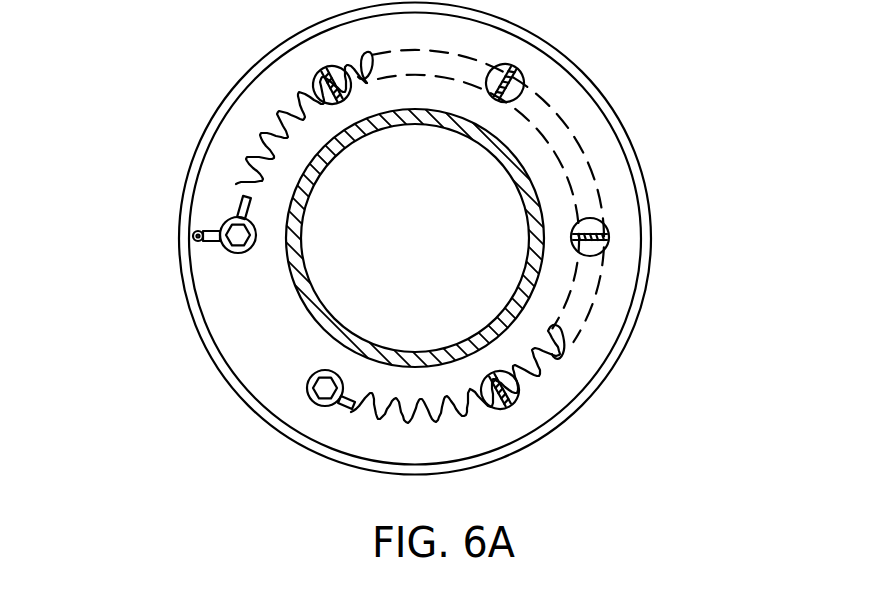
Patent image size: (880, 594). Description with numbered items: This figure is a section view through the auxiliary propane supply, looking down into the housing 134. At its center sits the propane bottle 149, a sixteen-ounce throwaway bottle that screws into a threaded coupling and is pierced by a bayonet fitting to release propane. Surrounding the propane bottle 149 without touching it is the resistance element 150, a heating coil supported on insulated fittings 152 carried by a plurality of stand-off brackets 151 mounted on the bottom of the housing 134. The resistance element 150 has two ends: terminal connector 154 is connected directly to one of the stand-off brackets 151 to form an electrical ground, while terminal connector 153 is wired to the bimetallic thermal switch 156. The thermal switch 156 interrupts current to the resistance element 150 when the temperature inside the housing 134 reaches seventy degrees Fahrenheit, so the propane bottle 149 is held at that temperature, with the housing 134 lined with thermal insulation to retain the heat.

The housing 134 is at (613, 363).
The propane bottle 149 is at (323, 148).
The resistance element 150 is at (256, 164).
The stand-off bracket 151 is at (527, 92).
The insulated fitting 152 is at (598, 228).
The terminal connector 153 is at (222, 248).
The terminal connector 154 is at (307, 390).
The bimetallic thermal switch 156 is at (193, 233).